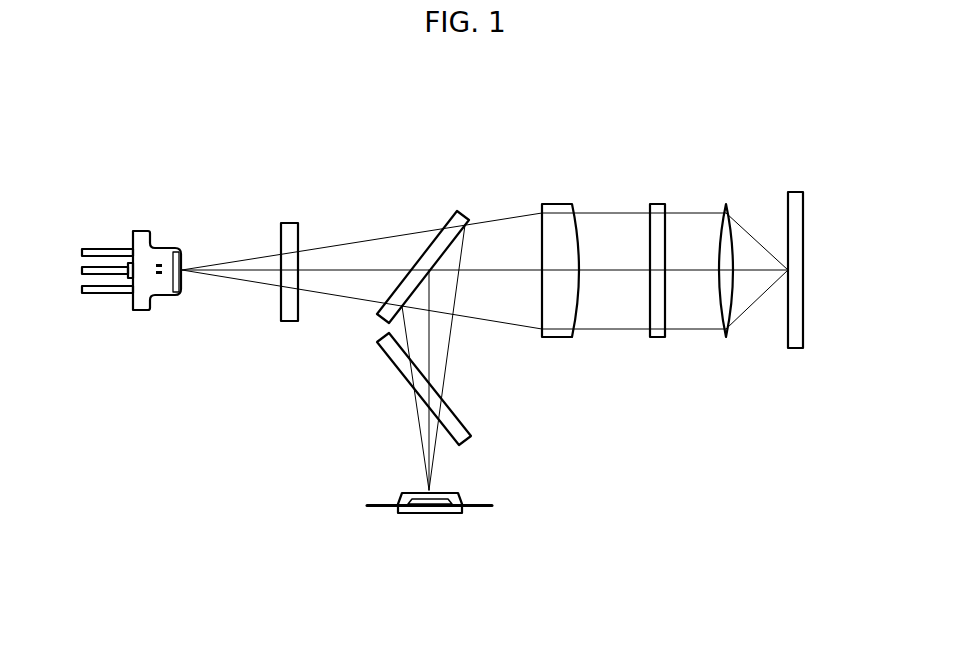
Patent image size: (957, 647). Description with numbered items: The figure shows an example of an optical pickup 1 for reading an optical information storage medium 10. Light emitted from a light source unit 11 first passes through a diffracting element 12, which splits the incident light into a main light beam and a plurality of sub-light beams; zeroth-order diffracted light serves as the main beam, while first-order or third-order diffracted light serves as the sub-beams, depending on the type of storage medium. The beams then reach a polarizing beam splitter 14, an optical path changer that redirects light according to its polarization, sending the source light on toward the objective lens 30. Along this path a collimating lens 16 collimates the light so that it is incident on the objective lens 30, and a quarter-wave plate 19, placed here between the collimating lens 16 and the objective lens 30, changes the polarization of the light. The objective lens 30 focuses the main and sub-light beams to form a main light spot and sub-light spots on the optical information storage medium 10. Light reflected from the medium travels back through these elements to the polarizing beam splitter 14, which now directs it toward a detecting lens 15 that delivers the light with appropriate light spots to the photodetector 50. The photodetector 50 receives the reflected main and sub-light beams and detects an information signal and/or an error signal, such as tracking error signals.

The optical pickup 1 is at (485, 125).
The light source unit 11 is at (165, 248).
The diffracting element 12 is at (289, 228).
The polarizing beam splitter 14 is at (463, 212).
The detecting lens 15 is at (455, 426).
The collimating lens 16 is at (560, 208).
The quarter-wave plate 19 is at (657, 208).
The objective lens 30 is at (726, 210).
The optical information storage medium 10 is at (795, 200).
The photodetector 50 is at (429, 514).